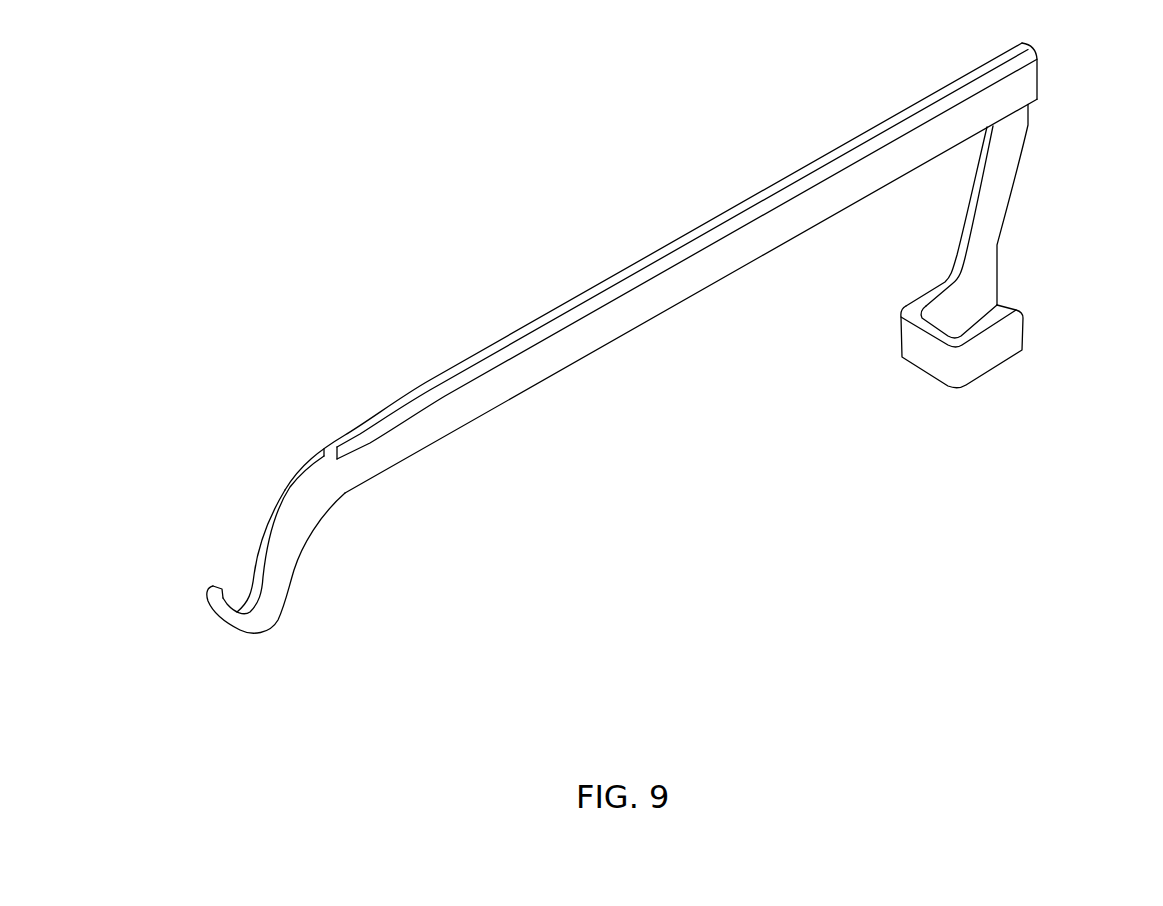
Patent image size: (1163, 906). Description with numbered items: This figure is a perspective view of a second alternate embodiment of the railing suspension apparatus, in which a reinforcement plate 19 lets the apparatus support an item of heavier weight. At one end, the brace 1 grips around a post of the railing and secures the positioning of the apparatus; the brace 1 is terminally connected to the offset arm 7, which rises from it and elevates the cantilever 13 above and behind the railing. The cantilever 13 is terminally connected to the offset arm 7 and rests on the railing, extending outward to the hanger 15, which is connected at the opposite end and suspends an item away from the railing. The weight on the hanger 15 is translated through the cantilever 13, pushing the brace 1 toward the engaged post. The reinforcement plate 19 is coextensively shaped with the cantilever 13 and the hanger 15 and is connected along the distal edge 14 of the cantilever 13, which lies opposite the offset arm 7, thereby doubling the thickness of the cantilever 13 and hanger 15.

The brace 1 is at (1033, 327).
The offset arm 7 is at (1024, 188).
The cantilever 13 is at (668, 248).
The distal edge 14 is at (405, 405).
The hanger 15 is at (264, 529).
The reinforcement plate 19 is at (569, 357).